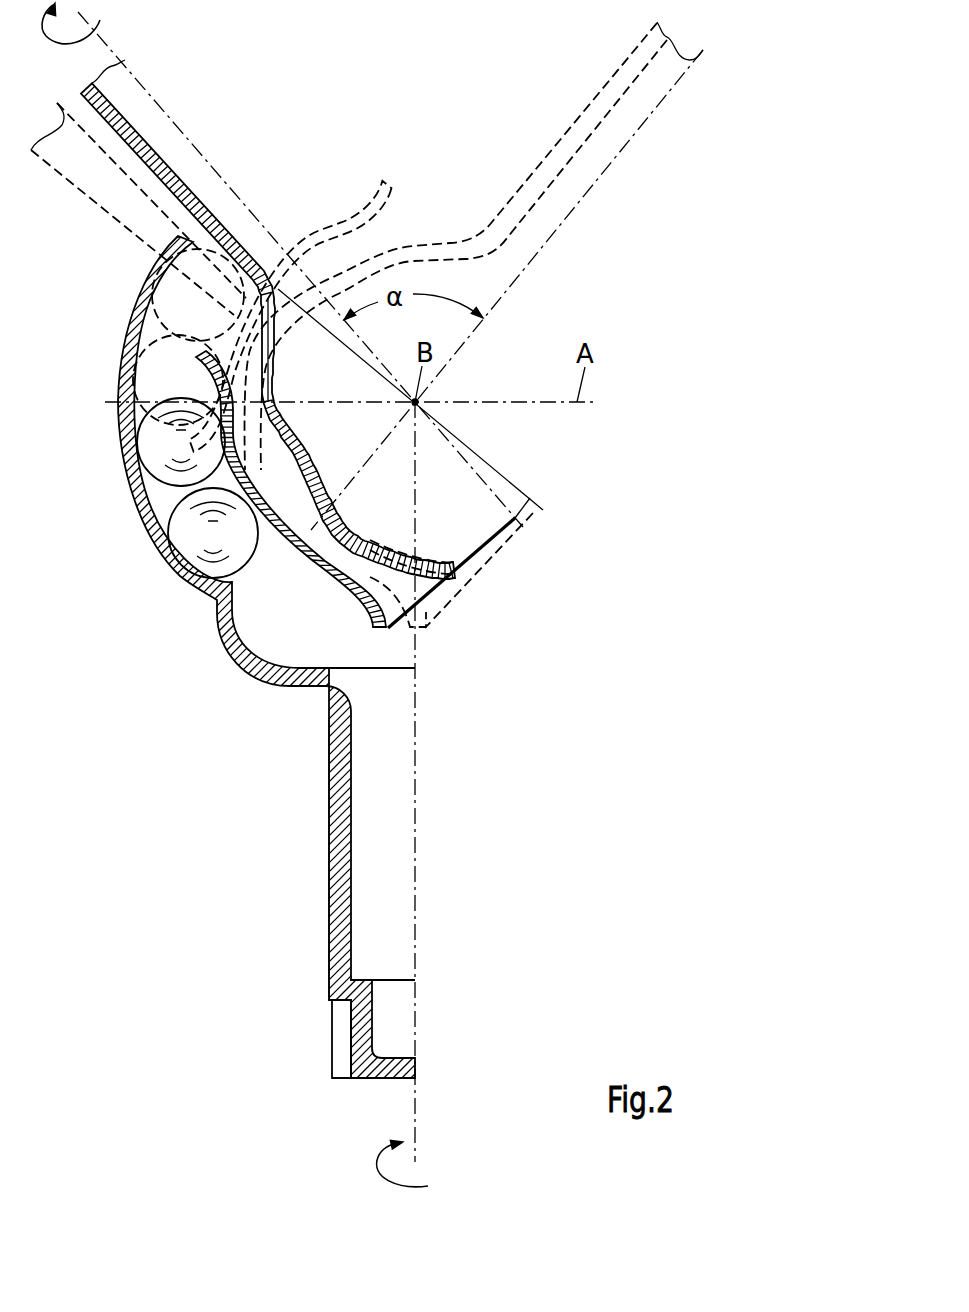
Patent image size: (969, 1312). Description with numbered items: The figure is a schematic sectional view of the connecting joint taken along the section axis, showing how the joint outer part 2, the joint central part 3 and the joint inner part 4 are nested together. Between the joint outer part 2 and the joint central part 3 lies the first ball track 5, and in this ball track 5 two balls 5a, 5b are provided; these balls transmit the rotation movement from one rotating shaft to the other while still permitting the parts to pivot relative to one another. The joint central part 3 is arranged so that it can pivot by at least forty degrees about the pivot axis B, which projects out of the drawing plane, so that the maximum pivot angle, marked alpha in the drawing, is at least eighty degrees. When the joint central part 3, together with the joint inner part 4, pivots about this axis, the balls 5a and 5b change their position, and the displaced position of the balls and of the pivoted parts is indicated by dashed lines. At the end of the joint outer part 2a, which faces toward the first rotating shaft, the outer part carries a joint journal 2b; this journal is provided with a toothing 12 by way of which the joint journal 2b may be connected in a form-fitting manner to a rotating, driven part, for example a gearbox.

The joint outer part 2 is at (135, 323).
The end of the joint outer part 2a is at (340, 1022).
The joint journal 2b is at (350, 1100).
The joint central part 3 is at (310, 557).
The joint inner part 4 is at (292, 462).
The first ball track 5 is at (158, 382).
The ball 5a is at (188, 545).
The ball 5b is at (155, 457).
The toothing 12 is at (338, 1058).